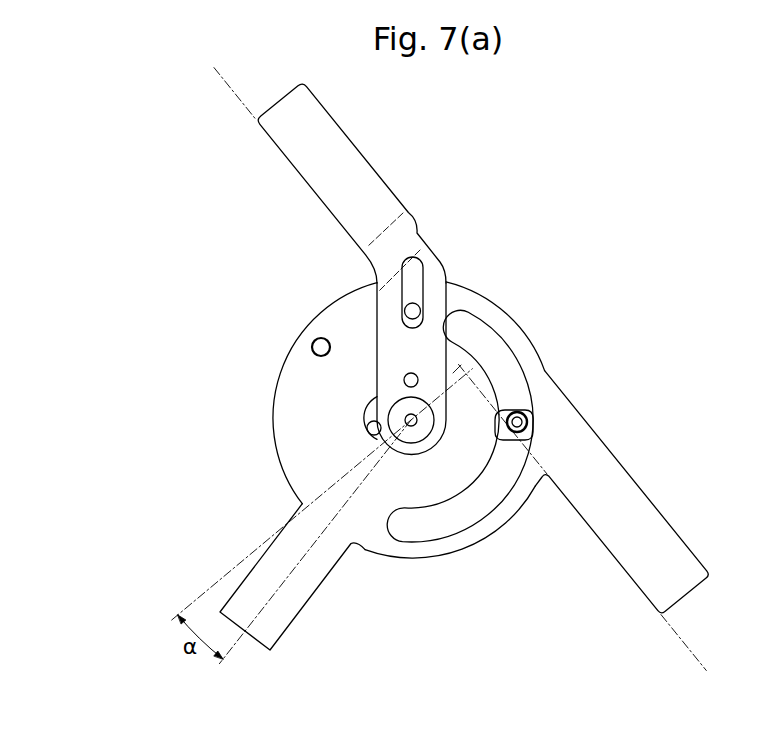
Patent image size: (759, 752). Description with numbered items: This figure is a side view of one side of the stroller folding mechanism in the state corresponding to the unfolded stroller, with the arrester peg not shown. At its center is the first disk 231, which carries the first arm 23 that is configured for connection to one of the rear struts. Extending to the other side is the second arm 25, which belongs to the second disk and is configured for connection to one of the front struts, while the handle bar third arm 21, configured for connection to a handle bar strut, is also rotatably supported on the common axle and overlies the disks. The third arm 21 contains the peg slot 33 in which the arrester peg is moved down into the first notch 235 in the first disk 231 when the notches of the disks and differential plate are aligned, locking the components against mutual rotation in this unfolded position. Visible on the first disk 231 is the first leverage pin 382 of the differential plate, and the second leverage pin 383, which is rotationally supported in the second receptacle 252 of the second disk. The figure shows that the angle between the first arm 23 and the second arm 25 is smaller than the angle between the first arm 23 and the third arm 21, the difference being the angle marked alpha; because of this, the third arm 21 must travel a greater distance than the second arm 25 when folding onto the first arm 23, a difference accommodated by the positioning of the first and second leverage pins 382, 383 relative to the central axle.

The third arm 21 is at (323, 138).
The first arm 23 is at (303, 588).
The second arm 25 is at (642, 513).
The peg slot 33 is at (416, 272).
The first disk 231 is at (467, 543).
The first notch 235 is at (413, 311).
The second receptacle 252 is at (503, 442).
The first leverage pin 382 is at (312, 347).
The second leverage pin 383 is at (525, 418).